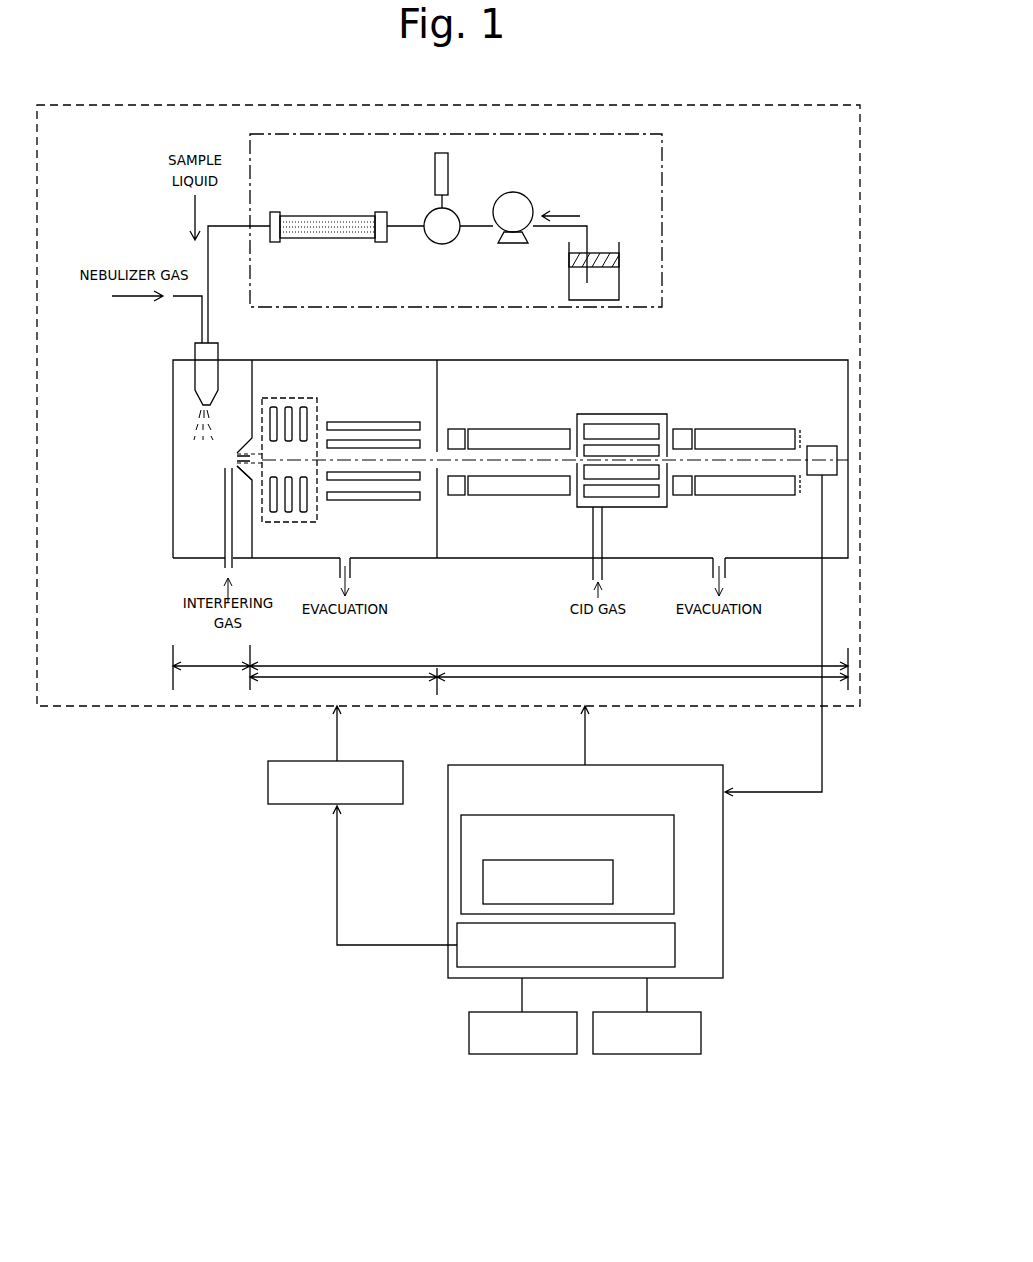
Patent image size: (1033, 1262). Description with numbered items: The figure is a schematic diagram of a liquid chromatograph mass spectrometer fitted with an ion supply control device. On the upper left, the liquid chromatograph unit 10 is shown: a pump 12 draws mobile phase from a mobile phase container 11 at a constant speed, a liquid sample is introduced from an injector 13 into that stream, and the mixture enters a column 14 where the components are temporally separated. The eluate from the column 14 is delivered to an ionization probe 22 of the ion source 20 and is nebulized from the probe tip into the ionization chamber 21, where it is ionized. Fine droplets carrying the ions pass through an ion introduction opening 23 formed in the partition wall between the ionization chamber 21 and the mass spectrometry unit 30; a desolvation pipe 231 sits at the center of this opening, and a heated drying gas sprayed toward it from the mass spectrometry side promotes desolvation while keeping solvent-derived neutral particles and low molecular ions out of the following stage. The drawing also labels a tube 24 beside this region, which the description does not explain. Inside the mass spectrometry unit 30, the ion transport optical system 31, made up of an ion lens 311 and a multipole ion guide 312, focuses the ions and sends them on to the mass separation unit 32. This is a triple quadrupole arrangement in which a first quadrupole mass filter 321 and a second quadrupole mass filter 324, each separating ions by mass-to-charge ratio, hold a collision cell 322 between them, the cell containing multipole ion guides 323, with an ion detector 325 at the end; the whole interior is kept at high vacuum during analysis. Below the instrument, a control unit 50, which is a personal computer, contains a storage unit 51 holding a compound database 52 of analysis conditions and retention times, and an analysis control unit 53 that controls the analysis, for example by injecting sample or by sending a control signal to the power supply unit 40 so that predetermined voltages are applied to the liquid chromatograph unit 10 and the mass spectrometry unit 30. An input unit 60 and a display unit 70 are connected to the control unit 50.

The liquid chromatograph unit 10 is at (662, 165).
The mobile phase container 11 is at (619, 276).
The pump 12 is at (515, 243).
The injector 13 is at (447, 245).
The column 14 is at (333, 242).
The ion source 20 is at (211, 663).
The ionization chamber 21 is at (187, 564).
The ionization probe 22 is at (218, 357).
The ion introduction opening 23 is at (224, 465).
The interfering gas supply tube 24 is at (224, 494).
The desolvation pipe 231 is at (249, 470).
The mass spectrometry unit 30 is at (549, 663).
The ion transport optical system 31 is at (343, 687).
The mass separation unit 32 is at (642, 690).
The ion lens 311 is at (292, 397).
The multipole ion guide 312 is at (360, 421).
The first quadrupole mass filter 321 is at (487, 428).
The collision cell 322 is at (635, 414).
The multipole ion guides 323 is at (595, 424).
The second quadrupole mass filter 324 is at (738, 428).
The ion detector 325 is at (822, 445).
The power supply unit 40 is at (365, 805).
The control unit 50 is at (610, 871).
The storage unit 51 is at (675, 864).
The compound database 52 is at (613, 884).
The analysis control unit 53 is at (675, 943).
The input unit 60 is at (538, 1055).
The display unit 70 is at (663, 1055).